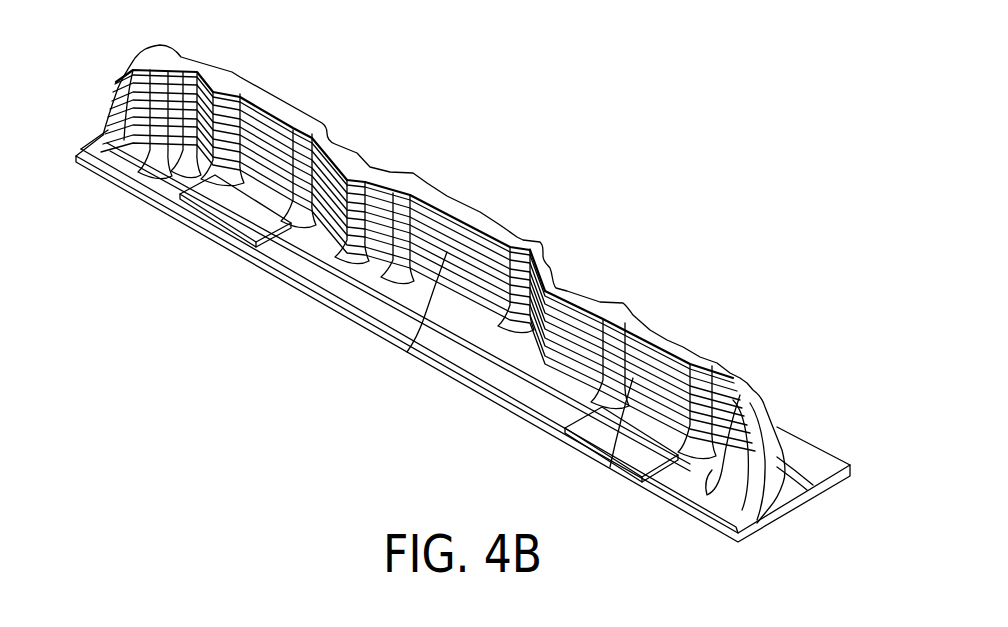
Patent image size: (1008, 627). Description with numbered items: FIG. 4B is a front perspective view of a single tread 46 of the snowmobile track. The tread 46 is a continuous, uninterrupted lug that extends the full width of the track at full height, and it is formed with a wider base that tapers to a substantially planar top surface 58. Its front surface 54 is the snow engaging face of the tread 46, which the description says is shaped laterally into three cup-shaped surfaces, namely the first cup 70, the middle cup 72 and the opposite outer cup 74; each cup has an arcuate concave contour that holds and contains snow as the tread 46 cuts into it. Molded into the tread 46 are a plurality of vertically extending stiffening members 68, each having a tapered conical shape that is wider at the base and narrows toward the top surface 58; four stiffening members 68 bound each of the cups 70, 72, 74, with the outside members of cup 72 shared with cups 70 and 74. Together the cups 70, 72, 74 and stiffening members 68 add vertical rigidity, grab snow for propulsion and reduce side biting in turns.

The tread 46 is at (127, 85).
The front surface 54 is at (800, 505).
The top surface 58 is at (632, 313).
The stiffening member 68 is at (551, 287).
The first cup-shaped surface 70 is at (607, 455).
The cup surface 72 is at (412, 348).
The cup surface 74 is at (217, 233).